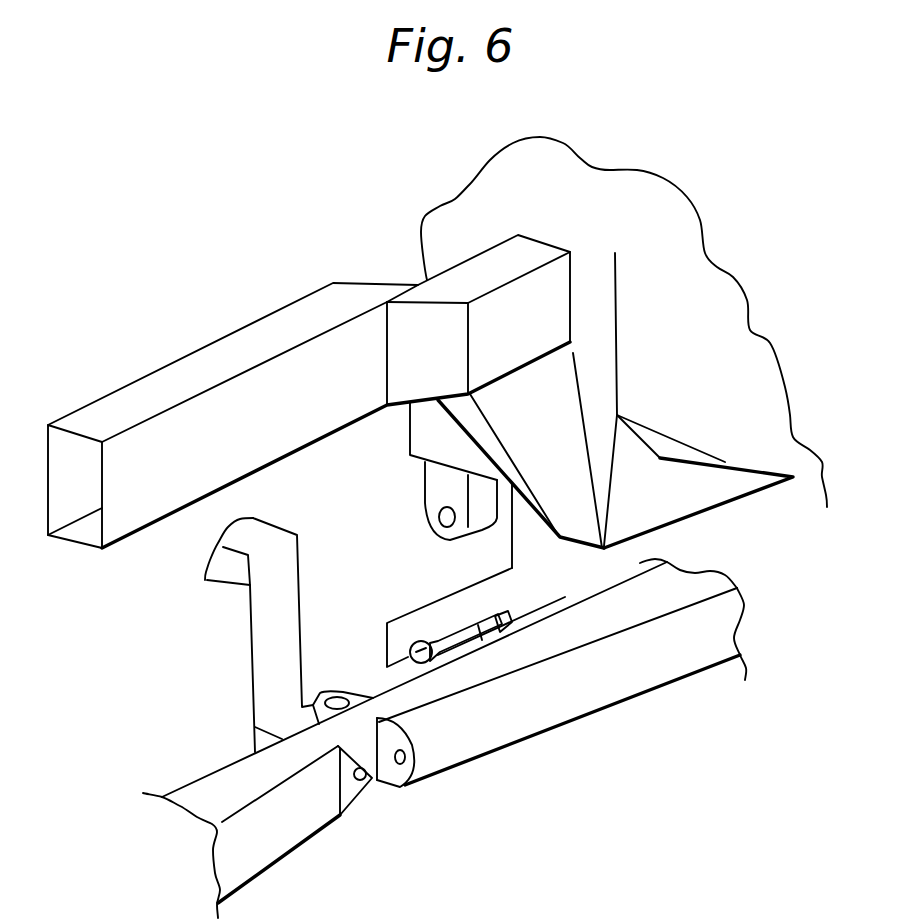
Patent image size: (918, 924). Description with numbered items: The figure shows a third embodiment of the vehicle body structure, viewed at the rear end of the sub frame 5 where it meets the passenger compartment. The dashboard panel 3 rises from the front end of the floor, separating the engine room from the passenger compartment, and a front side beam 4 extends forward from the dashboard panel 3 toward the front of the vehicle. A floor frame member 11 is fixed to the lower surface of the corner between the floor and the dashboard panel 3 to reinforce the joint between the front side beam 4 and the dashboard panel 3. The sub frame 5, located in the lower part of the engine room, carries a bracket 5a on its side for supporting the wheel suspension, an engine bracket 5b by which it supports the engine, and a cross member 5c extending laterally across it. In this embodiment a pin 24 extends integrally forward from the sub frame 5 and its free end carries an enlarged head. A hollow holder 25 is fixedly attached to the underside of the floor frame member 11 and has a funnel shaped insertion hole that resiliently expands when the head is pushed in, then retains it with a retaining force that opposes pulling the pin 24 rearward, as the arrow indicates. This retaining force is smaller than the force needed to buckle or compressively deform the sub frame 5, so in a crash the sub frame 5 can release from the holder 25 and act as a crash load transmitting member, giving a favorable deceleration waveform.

The dashboard panel 3 is at (748, 458).
The front side beam 4 is at (205, 355).
The floor frame member 11 is at (433, 415).
The hollow holder 25 is at (428, 485).
The pin 24 is at (463, 620).
The sub frame 5 is at (597, 703).
The bracket 5a is at (378, 798).
The engine bracket 5b is at (288, 603).
The cross member 5c is at (325, 692).